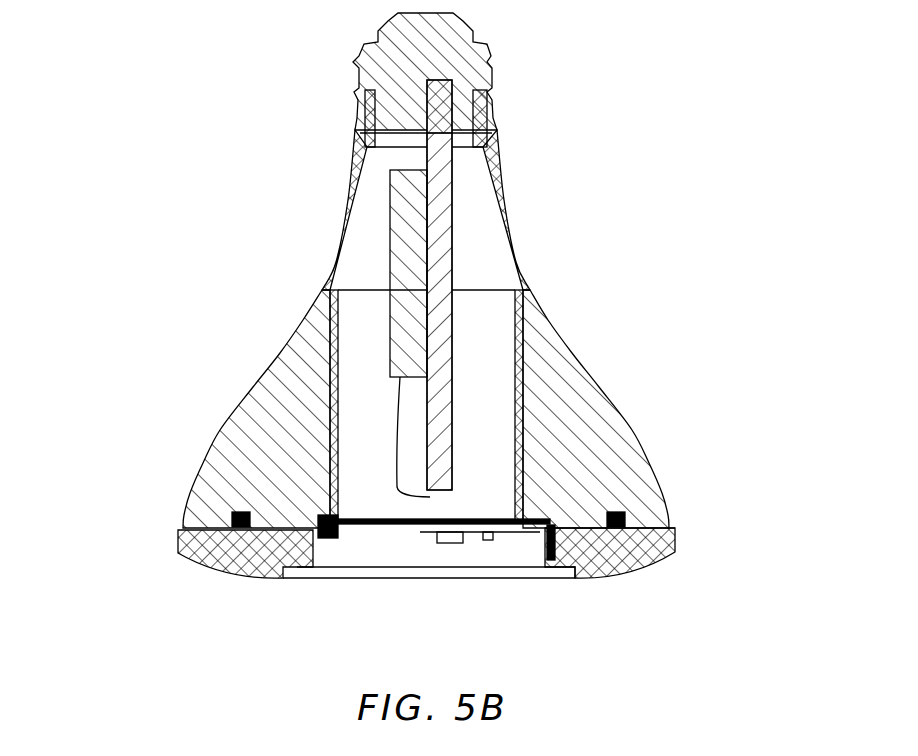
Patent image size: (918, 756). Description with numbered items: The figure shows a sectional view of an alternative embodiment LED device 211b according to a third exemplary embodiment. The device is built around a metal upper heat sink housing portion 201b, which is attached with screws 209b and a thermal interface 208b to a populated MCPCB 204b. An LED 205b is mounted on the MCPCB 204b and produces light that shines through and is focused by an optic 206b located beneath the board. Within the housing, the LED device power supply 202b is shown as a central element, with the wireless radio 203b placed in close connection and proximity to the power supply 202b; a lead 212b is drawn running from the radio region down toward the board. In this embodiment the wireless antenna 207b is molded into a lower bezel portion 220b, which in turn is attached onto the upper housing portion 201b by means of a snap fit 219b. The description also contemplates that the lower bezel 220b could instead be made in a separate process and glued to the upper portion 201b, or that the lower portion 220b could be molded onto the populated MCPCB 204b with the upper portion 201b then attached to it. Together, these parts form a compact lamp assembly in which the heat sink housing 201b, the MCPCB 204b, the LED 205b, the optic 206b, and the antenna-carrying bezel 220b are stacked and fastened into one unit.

The LED device 211b is at (668, 48).
The metal upper heat sink housing portion 201b is at (573, 352).
The LED device power supply 202b is at (447, 172).
The wireless radio 203b is at (397, 230).
The wire lead 212b is at (400, 377).
The populated MCPCB 204b is at (525, 508).
The LED 205b is at (510, 517).
The screws 209b is at (330, 517).
The snap fit 219b is at (240, 512).
The thermal interface 208b is at (210, 560).
The lower bezel portion 220b is at (675, 535).
The optic 206b is at (325, 567).
The wireless antenna 207b is at (597, 573).